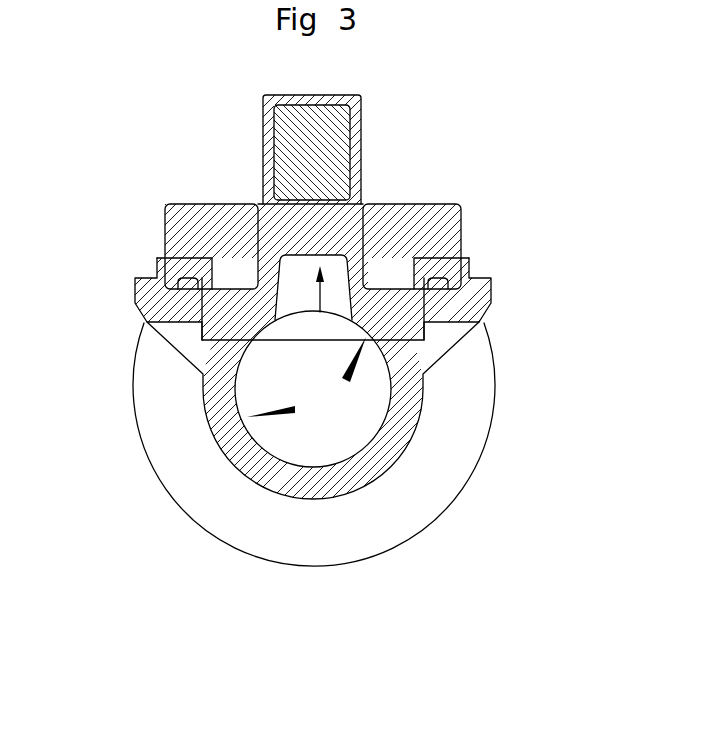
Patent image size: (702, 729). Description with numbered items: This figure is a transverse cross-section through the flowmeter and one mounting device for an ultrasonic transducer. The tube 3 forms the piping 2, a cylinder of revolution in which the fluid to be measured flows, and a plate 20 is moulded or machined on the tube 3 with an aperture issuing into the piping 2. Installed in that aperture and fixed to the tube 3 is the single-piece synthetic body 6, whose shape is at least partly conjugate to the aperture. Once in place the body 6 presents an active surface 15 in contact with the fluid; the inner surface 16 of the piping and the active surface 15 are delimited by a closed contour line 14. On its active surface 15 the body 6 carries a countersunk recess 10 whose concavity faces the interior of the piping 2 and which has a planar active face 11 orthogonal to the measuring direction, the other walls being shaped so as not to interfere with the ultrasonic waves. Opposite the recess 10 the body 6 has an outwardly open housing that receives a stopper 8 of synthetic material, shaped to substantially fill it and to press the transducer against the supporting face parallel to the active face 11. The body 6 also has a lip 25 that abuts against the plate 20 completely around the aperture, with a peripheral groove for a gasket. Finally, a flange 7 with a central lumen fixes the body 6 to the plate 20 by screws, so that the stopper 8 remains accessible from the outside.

The piping 2 is at (350, 433).
The tube 3 is at (418, 409).
The body 6 is at (332, 235).
The flange 7 is at (235, 225).
The stopper 8 is at (318, 150).
The countersunk recess 10 is at (147, 322).
The active face 11 is at (372, 228).
The contour line 14 is at (255, 333).
The active surface 15 is at (366, 337).
The inner surface 16 is at (252, 414).
The plate 20 is at (490, 277).
The lip 25 is at (187, 262).